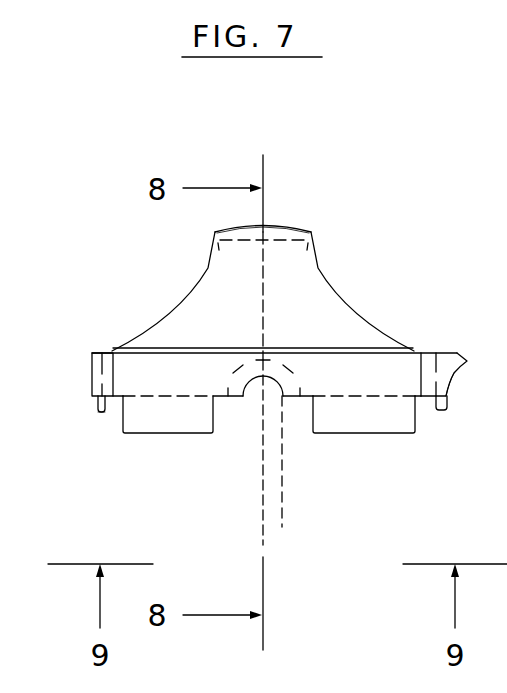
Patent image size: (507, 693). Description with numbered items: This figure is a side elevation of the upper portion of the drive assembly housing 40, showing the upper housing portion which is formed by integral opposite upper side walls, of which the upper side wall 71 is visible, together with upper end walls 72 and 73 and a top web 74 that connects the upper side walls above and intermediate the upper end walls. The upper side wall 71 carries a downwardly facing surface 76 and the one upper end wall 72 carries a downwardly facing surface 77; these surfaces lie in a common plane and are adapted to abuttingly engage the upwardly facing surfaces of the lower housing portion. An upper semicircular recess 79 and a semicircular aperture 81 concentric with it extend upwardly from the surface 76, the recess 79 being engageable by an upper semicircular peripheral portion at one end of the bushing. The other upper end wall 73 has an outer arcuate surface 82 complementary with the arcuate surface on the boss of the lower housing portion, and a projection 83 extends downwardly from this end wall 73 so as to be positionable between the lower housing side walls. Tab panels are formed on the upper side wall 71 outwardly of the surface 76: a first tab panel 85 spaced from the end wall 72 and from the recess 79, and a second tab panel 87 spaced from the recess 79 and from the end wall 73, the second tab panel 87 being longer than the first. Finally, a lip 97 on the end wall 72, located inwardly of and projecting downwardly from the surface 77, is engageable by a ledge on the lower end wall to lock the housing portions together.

The body 40 is at (186, 289).
The upper side wall 71 is at (306, 308).
The upper end wall 72 is at (92, 380).
The other upper end wall 73 is at (458, 352).
The top web 74 is at (283, 226).
The downwardly facing surface 76 is at (307, 396).
The downwardly facing surface 77 is at (97, 398).
The upper semicircular recess 79 is at (280, 456).
The semicircular aperture 81 is at (247, 398).
The outer arcuate surface 82 is at (452, 382).
The projection 83 is at (440, 410).
The first tab panel 85 is at (197, 437).
The second tab panel 87 is at (365, 433).
The lip 97 is at (102, 412).